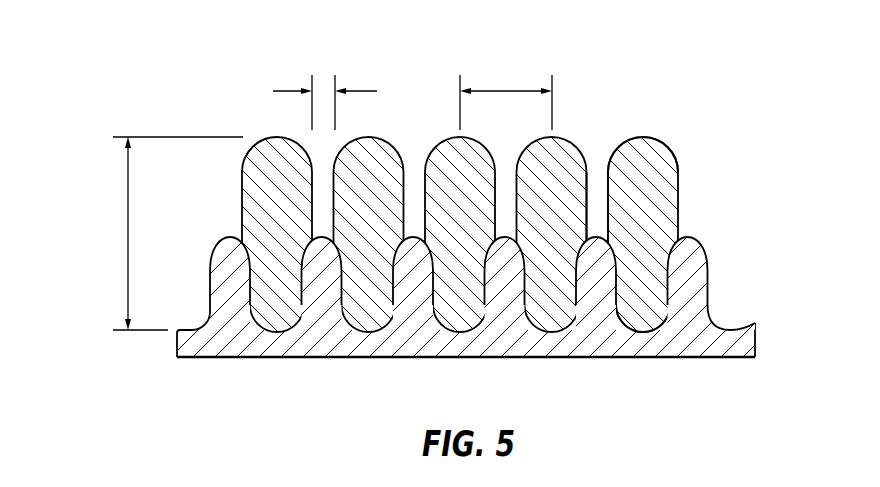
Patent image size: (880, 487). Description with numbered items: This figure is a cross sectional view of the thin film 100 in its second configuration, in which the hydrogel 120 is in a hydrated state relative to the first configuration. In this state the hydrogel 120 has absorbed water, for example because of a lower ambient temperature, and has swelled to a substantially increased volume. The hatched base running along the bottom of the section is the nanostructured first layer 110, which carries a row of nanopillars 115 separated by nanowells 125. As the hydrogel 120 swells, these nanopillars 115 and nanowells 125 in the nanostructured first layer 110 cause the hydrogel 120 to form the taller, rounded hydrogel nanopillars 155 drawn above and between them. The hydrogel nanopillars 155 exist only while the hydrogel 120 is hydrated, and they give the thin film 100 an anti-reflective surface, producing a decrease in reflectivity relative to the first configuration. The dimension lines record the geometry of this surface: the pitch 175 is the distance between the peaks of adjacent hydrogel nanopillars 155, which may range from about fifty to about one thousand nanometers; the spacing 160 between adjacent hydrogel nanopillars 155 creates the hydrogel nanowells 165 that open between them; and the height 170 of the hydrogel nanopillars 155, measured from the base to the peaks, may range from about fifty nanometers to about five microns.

The thin film 100 is at (458, 246).
The nanostructured first layer 110 is at (756, 324).
The nanopillars 115 is at (693, 237).
The hydrogel 120 is at (663, 197).
The nanowells 125 is at (642, 332).
The hydrogel nanopillars 155 is at (642, 137).
The spacing 160 is at (323, 92).
The hydrogel nanowells 165 is at (598, 163).
The height 170 is at (128, 235).
The pitch 175 is at (499, 92).